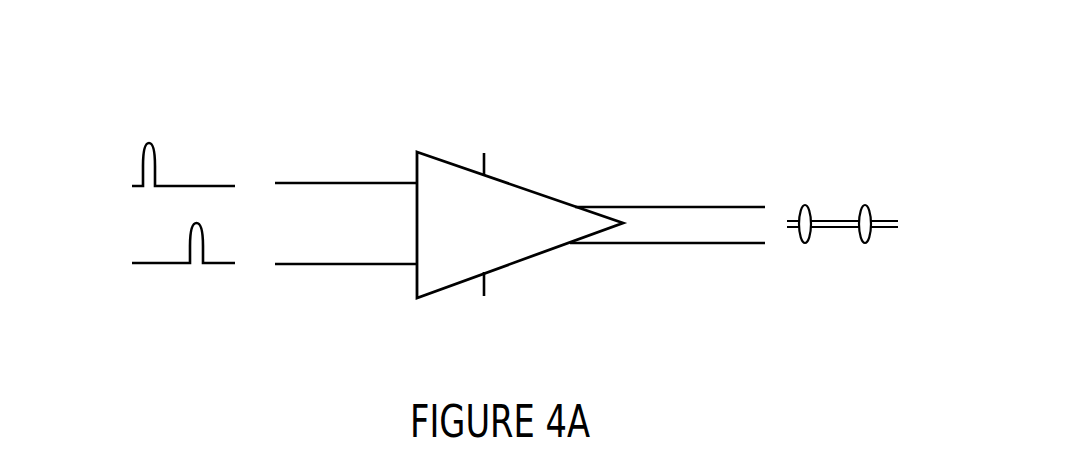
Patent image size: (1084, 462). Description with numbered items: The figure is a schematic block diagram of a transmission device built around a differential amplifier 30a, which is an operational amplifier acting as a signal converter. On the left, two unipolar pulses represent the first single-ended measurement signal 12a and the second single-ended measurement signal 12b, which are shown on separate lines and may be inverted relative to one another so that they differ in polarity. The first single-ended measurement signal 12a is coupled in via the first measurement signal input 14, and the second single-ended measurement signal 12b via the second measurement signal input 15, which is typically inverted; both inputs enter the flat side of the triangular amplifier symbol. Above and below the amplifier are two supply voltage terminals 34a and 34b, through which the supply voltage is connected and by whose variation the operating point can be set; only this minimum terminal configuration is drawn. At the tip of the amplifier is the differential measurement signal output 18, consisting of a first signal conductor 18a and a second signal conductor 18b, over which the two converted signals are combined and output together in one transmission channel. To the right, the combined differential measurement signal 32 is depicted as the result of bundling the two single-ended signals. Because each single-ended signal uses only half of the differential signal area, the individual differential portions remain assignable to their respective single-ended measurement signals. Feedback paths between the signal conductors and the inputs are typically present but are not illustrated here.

The first single-ended measurement signal 12a is at (156, 135).
The second single-ended measurement signal 12b is at (156, 282).
The first measurement signal input 14 is at (417, 183).
The second measurement signal input 15 is at (417, 264).
The differential amplifier 30a is at (557, 95).
The supply voltage terminal 34a is at (484, 169).
The supply voltage terminal 34b is at (484, 283).
The differential measurement signal output 18 is at (707, 127).
The first signal conductor 18a is at (571, 205).
The second signal conductor 18b is at (573, 244).
The combined differential measurement signal 32 is at (841, 195).